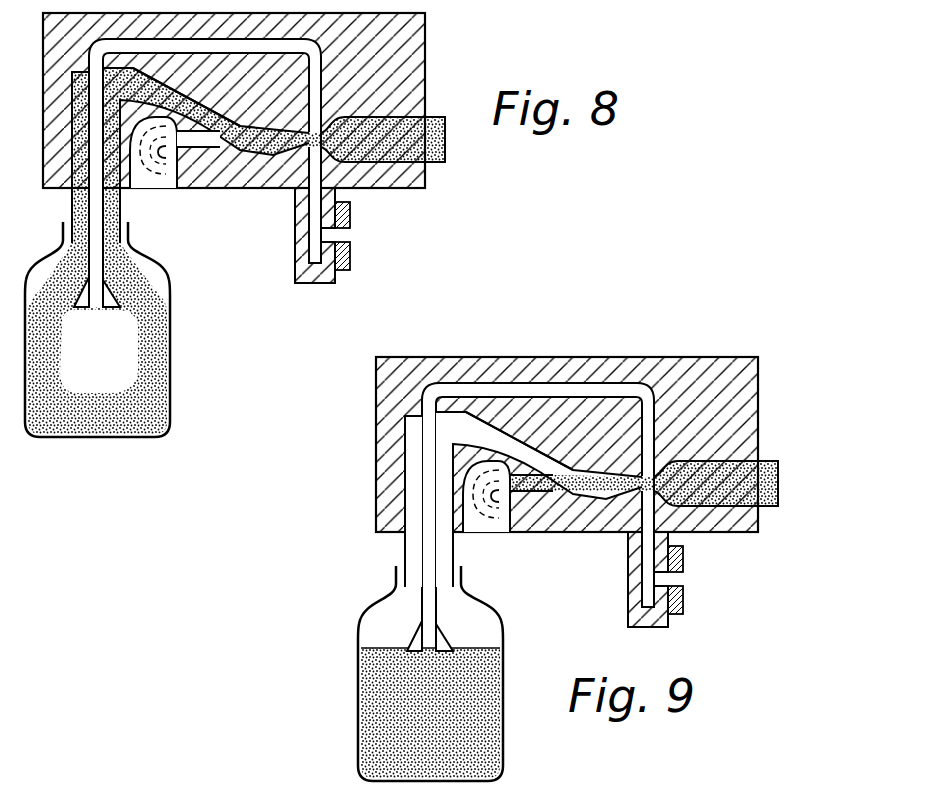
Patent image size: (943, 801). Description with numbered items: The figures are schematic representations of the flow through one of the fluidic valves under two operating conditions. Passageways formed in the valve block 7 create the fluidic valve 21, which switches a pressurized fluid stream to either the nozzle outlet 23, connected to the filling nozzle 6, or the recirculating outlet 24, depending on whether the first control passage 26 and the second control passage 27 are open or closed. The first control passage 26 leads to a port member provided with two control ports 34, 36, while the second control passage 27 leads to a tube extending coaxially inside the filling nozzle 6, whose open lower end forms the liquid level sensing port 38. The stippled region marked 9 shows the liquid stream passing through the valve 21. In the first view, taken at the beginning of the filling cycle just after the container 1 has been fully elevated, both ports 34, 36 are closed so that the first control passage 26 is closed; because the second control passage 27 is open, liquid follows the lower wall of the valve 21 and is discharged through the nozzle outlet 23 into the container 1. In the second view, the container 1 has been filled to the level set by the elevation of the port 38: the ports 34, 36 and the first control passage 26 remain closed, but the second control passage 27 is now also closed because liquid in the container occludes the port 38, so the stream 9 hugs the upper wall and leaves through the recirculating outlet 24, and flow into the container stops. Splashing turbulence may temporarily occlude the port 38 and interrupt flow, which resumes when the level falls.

In FIG. 8, the container 1 is at (170, 328).
In FIG. 9, the container 1 is at (450, 673).
In FIG. 8, the filling nozzle 6 is at (122, 212).
In FIG. 9, the filling nozzle 6 is at (495, 499).
In FIG. 8, the valve block 7 is at (430, 78).
In FIG. 9, the valve block 7 is at (591, 492).
In FIG. 8, the slug of material 9 is at (428, 140).
In FIG. 9, the slug of material 9 is at (730, 498).
In FIG. 8, the fluidic valve 21 is at (233, 111).
In FIG. 9, the fluidic valve 21 is at (545, 447).
In FIG. 8, the nozzle outlet 23 is at (220, 110).
In FIG. 9, the nozzle outlet 23 is at (519, 399).
In FIG. 8, the recirculating outlet 24 is at (184, 146).
In FIG. 9, the recirculating outlet 24 is at (552, 510).
In FIG. 8, the first control passage 26 is at (320, 173).
In FIG. 9, the first control passage 26 is at (684, 559).
In FIG. 8, the second control passage 27 is at (318, 70).
In FIG. 9, the second control passage 27 is at (557, 487).
In FIG. 8, the control port 34 is at (327, 256).
In FIG. 9, the control port 34 is at (626, 596).
In FIG. 8, the control port 36 is at (327, 215).
In FIG. 9, the control port 36 is at (625, 555).
In FIG. 8, the liquid level sensing port 38 is at (96, 308).
In FIG. 9, the liquid level sensing port 38 is at (385, 638).